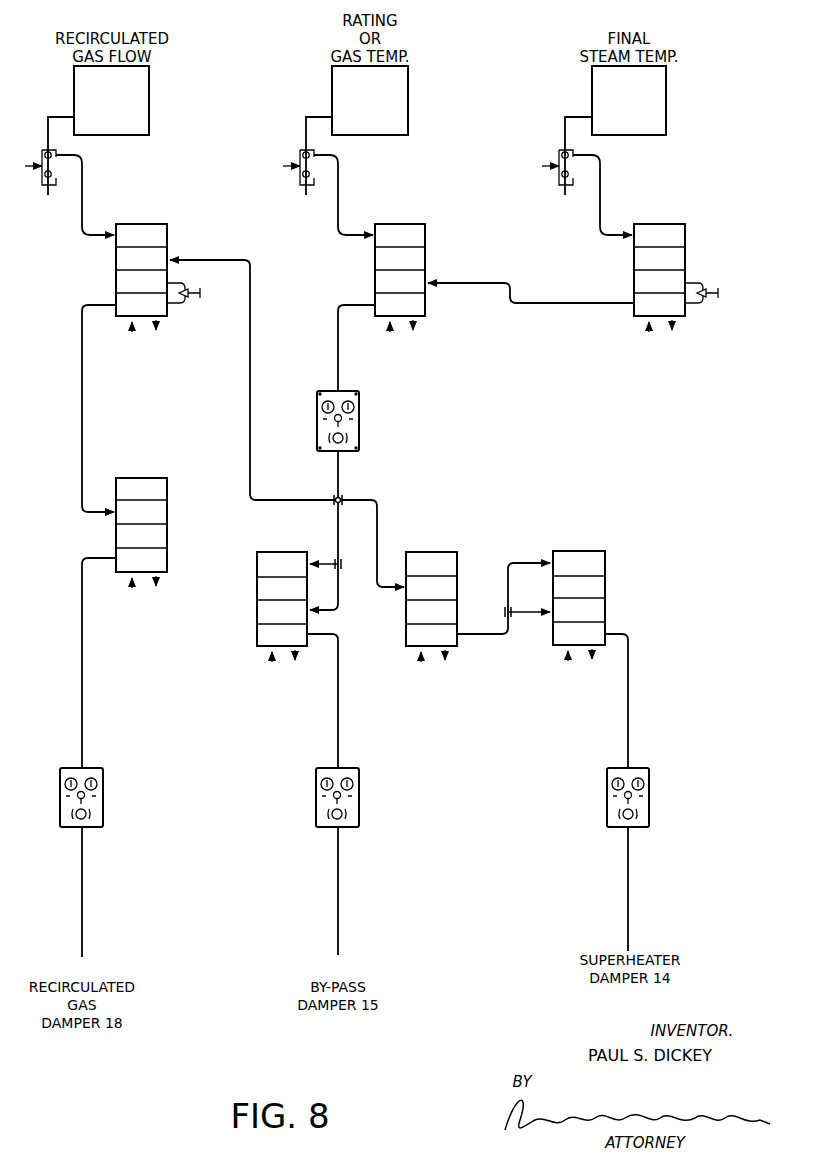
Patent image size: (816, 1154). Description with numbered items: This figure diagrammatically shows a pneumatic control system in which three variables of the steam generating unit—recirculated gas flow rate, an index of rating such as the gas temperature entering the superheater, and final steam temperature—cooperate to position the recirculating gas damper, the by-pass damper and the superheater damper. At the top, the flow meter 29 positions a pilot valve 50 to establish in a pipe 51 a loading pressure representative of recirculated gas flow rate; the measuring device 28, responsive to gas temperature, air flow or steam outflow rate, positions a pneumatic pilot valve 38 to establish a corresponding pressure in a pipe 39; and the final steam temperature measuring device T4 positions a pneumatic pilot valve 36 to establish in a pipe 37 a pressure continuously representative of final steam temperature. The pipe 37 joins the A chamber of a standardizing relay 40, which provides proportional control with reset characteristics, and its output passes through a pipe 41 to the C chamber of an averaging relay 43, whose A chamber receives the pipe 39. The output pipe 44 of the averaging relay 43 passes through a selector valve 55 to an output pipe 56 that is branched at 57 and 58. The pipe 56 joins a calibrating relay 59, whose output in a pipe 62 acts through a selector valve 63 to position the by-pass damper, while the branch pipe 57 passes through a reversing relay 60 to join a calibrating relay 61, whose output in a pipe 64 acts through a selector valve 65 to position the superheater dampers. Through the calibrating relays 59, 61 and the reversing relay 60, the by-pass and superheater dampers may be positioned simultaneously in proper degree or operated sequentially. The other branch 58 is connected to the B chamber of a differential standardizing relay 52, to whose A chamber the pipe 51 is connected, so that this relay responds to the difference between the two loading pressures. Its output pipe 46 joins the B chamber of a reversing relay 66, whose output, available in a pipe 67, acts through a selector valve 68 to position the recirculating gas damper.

The flow meter 29 is at (149, 100).
The gas temperature measuring device 28 is at (408, 100).
The final steam temperature measuring device T4 is at (666, 100).
The pilot valve 50 is at (40, 183).
The pneumatic pilot valve 38 is at (298, 183).
The pneumatic pilot valve 36 is at (557, 183).
The pipe 51 is at (84, 193).
The pipe 39 is at (340, 193).
The pipe 37 is at (602, 193).
The differential standardizing relay 52 is at (150, 224).
The averaging relay 43 is at (408, 224).
The standardizing relay 40 is at (668, 224).
The pipe 41 is at (535, 305).
The output pipe 44 is at (336, 340).
The selector valve 55 is at (359, 413).
The branch pipe 58 is at (248, 428).
The branch pipe 57 is at (379, 510).
The output pipe 56 is at (336, 523).
The output pipe 46 is at (84, 404).
The reversing relay 66 is at (134, 478).
The pipe 67 is at (84, 663).
The selector valve 68 is at (103, 795).
The calibrating relay 59 is at (265, 552).
The reversing relay 60 is at (434, 552).
The calibrating relay 61 is at (592, 551).
The pipe 62 is at (340, 710).
The selector valve 63 is at (359, 795).
The pipe 64 is at (630, 708).
The selector valve 65 is at (649, 795).